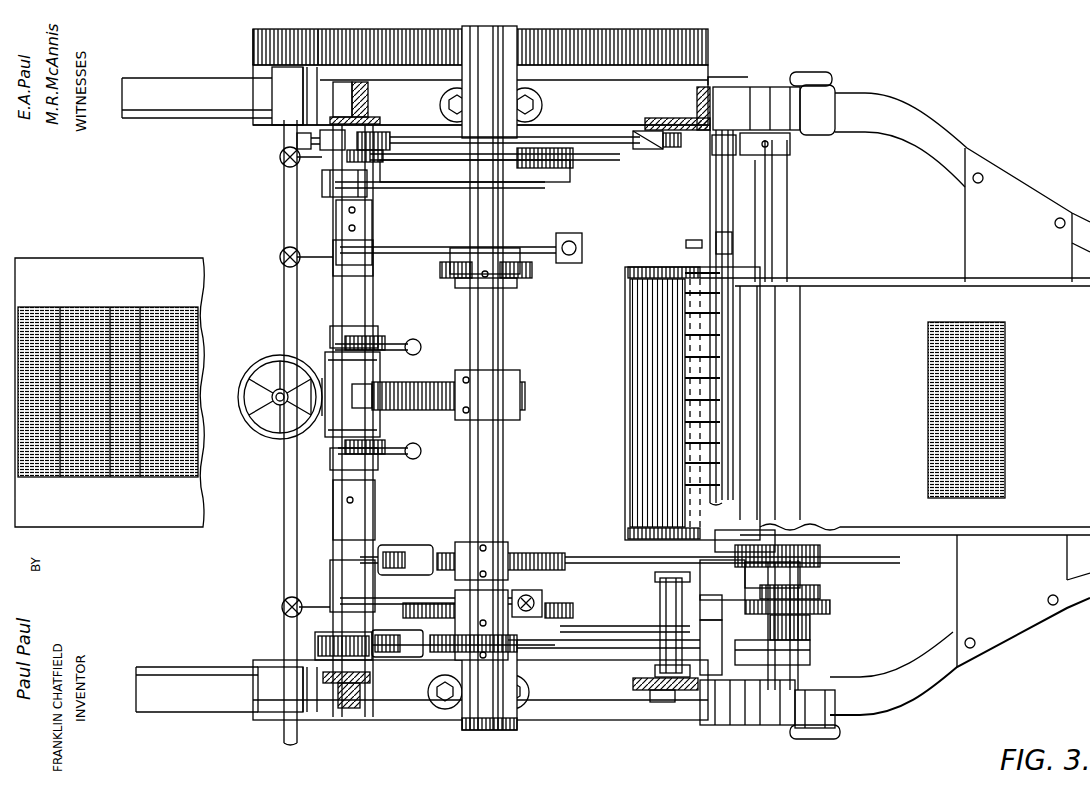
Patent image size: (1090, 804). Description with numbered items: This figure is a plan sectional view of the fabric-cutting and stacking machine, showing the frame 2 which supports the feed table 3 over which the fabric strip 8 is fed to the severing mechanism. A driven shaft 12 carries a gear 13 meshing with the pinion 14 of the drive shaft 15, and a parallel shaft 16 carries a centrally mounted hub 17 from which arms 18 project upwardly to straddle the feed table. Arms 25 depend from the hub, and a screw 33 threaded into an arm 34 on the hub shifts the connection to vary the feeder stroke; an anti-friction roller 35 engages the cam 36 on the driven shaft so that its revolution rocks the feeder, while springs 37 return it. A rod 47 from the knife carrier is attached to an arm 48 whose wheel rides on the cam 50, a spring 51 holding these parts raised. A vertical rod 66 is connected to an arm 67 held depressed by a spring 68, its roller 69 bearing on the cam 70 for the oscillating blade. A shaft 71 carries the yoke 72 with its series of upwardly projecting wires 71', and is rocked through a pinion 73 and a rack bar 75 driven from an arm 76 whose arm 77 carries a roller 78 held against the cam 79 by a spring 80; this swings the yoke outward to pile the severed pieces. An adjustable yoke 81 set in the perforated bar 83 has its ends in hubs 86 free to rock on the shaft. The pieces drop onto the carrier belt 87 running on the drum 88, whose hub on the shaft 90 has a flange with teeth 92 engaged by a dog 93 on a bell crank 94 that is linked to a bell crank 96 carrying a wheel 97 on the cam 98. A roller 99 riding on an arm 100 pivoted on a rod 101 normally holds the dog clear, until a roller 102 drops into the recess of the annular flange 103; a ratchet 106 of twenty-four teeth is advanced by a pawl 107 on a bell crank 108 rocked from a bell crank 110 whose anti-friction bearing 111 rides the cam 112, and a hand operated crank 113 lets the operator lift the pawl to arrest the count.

The frame 2 is at (262, 87).
The feed table 3 is at (200, 262).
The fabric strip 8 is at (200, 360).
The driven shaft 12 is at (500, 305).
The gear 13 is at (300, 45).
The pinion 14 is at (265, 47).
The drive shaft 15 is at (330, 540).
The shaft 16 is at (350, 490).
The hub 17 is at (355, 336).
The arms 18 is at (350, 322).
The arms 25 is at (338, 356).
The screw 33 is at (276, 390).
The arm 34 is at (335, 420).
The anti-friction roller 35 is at (378, 390).
The cam 36 is at (395, 395).
The springs 37 is at (420, 347).
The rod 47 is at (548, 590).
The arm 48 is at (458, 600).
The cam 50 is at (480, 612).
The spring 51 is at (282, 613).
The rod 66 is at (550, 252).
The arm 67 is at (522, 276).
The spring 68 is at (280, 265).
The anti-friction roller 69 is at (510, 286).
The cam 70 is at (520, 265).
The shaft 71 is at (783, 173).
The wires 71' is at (686, 403).
The yoke 72 is at (690, 243).
The pinion 73 is at (770, 148).
The rack bar 75 is at (748, 155).
The arm 76 is at (335, 170).
The arm 77 is at (500, 172).
The anti-friction roller 78 is at (510, 163).
The cam 79 is at (520, 155).
The spring 80 is at (282, 168).
The yoke 81 is at (345, 196).
The perforated bar 83 is at (660, 143).
The hubs 86 is at (345, 186).
The carrier belt 87 is at (800, 292).
The drum 88 is at (792, 272).
The shaft 90 is at (780, 222).
The teeth 92 is at (820, 550).
The dog 93 is at (800, 562).
The bell crank 94 is at (790, 577).
The bell crank 96 is at (420, 544).
The anti-friction wheel 97 is at (455, 552).
The cam 98 is at (495, 552).
The roller 99 is at (700, 598).
The arm 100 is at (820, 593).
The rod 101 is at (560, 642).
The roller 102 is at (720, 603).
The annular flange 103 is at (830, 609).
The ratchet 106 is at (810, 627).
The pawl 107 is at (722, 632).
The bell crank 108 is at (800, 652).
The bell crank 110 is at (373, 705).
The anti-friction bearing 111 is at (400, 656).
The cam 112 is at (425, 657).
The hand operated crank 113 is at (740, 77).